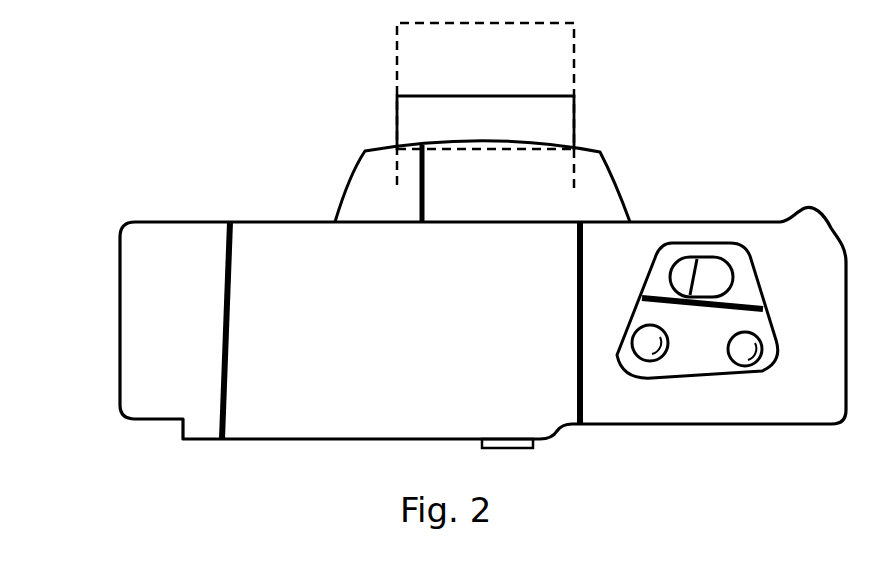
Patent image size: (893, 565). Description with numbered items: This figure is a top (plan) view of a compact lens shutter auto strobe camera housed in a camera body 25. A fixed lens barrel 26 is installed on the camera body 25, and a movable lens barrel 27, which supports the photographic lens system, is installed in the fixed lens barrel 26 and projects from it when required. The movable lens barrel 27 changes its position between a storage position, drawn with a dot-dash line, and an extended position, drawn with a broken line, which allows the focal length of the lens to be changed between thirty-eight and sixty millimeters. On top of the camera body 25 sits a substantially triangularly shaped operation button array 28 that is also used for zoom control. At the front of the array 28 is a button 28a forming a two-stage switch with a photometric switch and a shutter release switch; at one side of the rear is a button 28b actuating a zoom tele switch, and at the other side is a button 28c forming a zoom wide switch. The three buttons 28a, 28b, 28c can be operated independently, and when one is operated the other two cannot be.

The camera body 25 is at (119, 376).
The fixed lens barrel 26 is at (604, 167).
The movable lens barrel 27 is at (396, 73).
The operation button array 28 is at (762, 304).
The button 28a is at (710, 273).
The button 28b is at (748, 366).
The button 28c is at (651, 362).